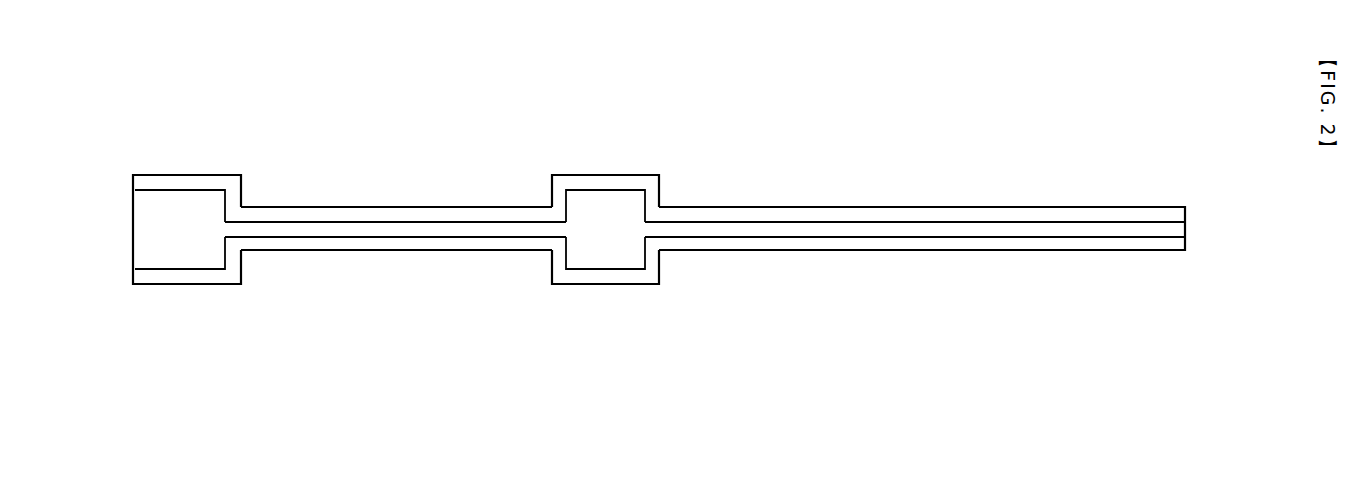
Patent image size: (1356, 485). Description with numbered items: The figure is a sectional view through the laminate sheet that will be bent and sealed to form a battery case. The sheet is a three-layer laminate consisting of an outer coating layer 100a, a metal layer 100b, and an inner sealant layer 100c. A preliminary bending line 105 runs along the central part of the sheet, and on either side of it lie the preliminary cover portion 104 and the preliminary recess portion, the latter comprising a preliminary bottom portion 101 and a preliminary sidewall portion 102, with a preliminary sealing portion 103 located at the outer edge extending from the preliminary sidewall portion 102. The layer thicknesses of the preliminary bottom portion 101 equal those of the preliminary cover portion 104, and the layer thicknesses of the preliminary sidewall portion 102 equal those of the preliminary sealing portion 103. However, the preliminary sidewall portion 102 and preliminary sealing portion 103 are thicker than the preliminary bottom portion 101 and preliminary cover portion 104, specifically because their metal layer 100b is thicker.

The outer coating layer 100a is at (1172, 215).
The metal layer 100b is at (1172, 228).
The inner sealant layer 100c is at (1172, 245).
The preliminary bottom portion 101 is at (552, 299).
The preliminary sidewall portion 102 is at (187, 299).
The preliminary sealing portion 103 is at (133, 299).
The preliminary cover portion 104 is at (659, 299).
The preliminary bending line 105 is at (658, 231).